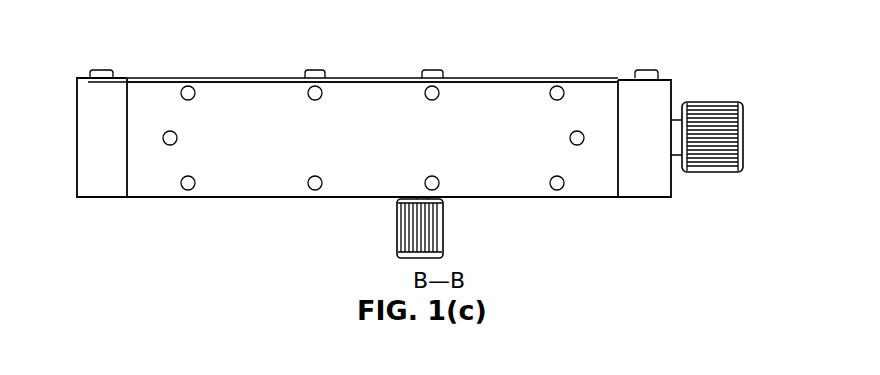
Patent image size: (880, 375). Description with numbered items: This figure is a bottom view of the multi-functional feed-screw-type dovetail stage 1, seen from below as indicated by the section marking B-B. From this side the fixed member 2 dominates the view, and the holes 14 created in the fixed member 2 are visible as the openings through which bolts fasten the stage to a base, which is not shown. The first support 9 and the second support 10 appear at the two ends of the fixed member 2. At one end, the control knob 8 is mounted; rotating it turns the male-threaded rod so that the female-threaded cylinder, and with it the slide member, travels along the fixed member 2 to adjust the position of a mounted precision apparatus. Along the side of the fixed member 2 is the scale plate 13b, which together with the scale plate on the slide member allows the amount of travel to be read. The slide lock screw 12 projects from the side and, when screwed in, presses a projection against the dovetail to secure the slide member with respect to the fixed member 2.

The multi-functional feed-screw-type dovetail stage 1 is at (636, 46).
The fixed member 2 is at (488, 93).
The control knob 8 is at (716, 107).
The first support 9 is at (82, 163).
The second support 10 is at (638, 185).
The slide lock screw 12 is at (432, 227).
The scale plate 13b is at (357, 78).
The holes 14 is at (196, 90).